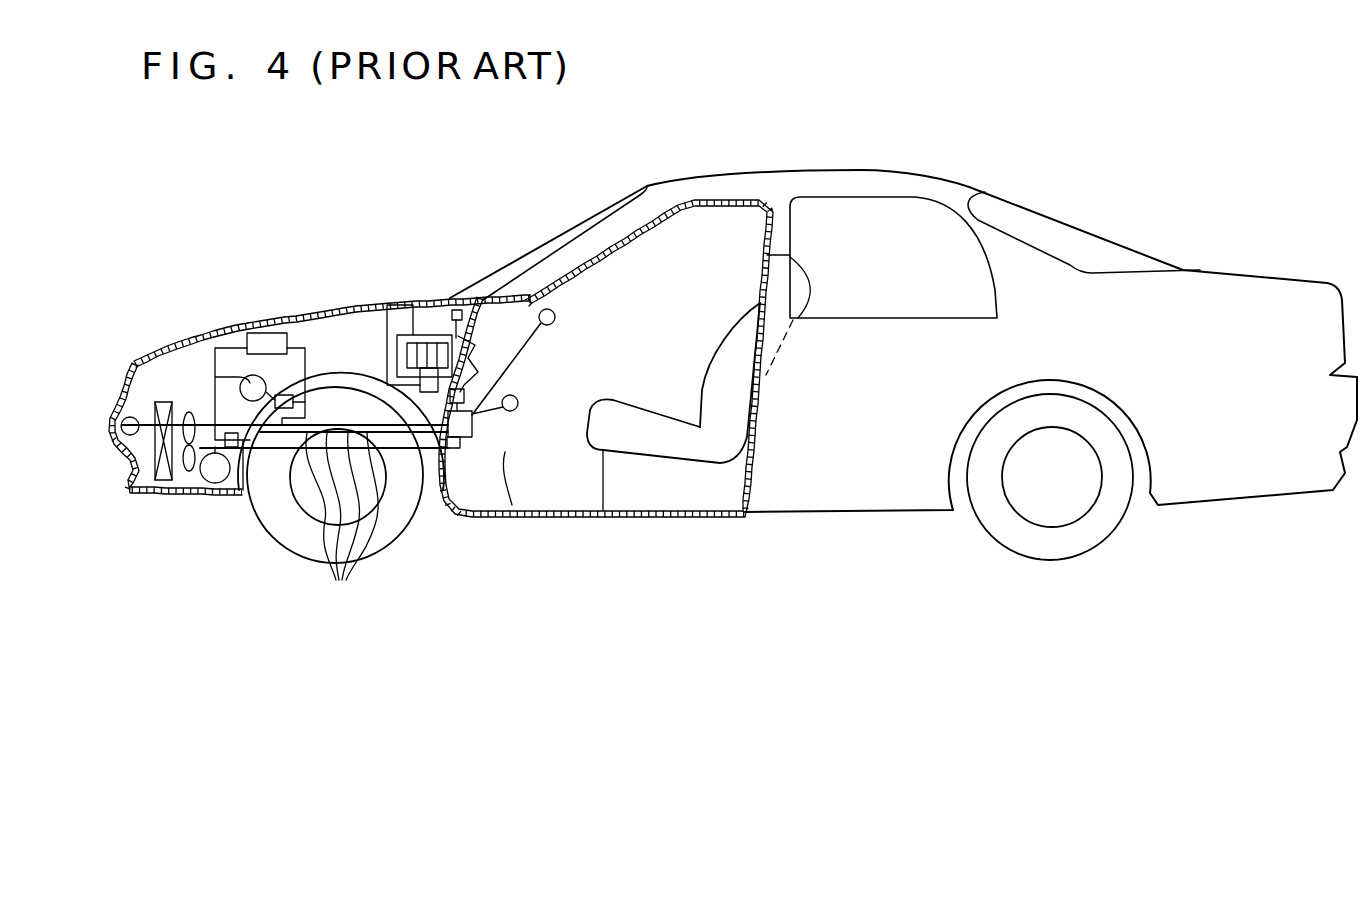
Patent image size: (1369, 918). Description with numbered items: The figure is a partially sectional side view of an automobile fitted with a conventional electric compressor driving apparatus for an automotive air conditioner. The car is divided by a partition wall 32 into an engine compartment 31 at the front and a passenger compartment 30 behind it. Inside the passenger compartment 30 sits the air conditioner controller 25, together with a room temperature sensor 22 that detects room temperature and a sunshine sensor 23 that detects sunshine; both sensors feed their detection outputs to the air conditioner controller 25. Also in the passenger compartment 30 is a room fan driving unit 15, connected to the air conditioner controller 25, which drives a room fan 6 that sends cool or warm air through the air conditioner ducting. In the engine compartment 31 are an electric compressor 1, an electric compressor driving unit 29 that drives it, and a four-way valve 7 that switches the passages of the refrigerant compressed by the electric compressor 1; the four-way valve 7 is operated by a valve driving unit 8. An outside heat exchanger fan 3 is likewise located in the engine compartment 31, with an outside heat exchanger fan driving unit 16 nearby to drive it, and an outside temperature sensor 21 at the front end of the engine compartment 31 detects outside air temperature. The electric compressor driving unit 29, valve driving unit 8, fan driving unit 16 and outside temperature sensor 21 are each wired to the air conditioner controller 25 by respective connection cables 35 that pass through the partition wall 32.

The electric compressor 1 is at (212, 485).
The outside heat exchanger fan 3 is at (188, 482).
The room fan 6 is at (430, 335).
The four-way valve 7 is at (185, 380).
The valve driving unit 8 is at (251, 375).
The room fan driving unit 15 is at (480, 318).
The outside heat exchanger fan driving unit 16 is at (255, 492).
The outside temperature sensor 21 is at (122, 405).
The room temperature sensor 22 is at (516, 412).
The sunshine sensor 23 is at (550, 308).
The air conditioner controller 25 is at (468, 445).
The electric compressor driving unit 29 is at (267, 333).
The passenger compartment 30 is at (505, 452).
The engine compartment 31 is at (165, 377).
The partition wall 32 is at (437, 494).
The connection cables 35 is at (342, 522).